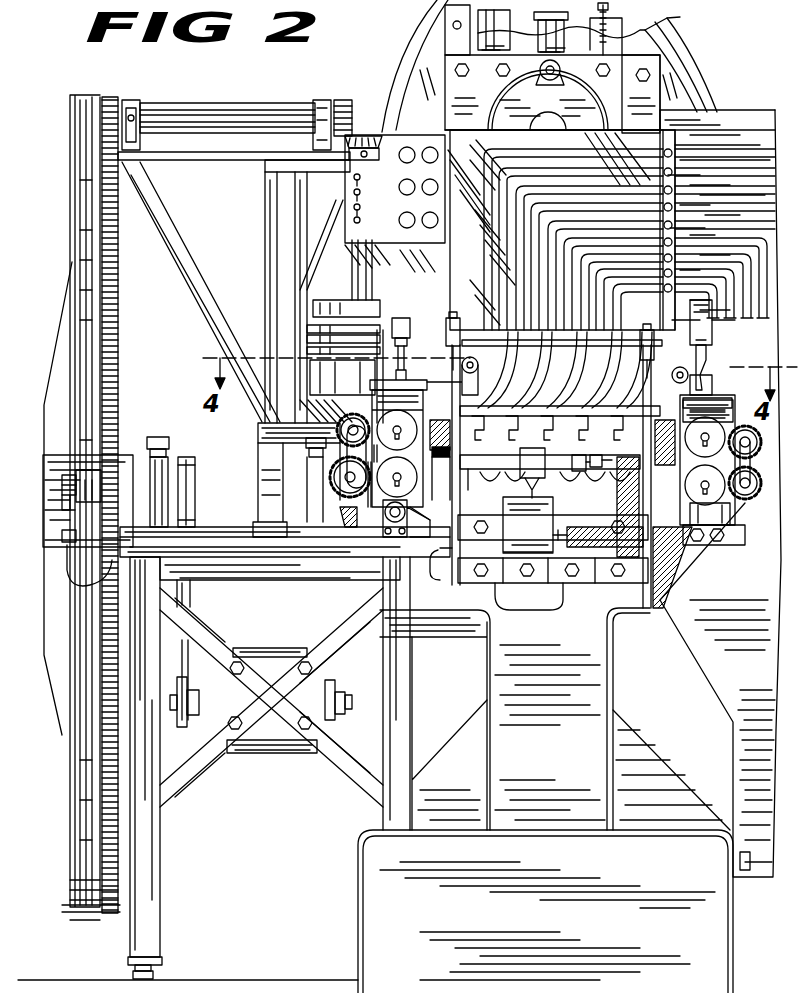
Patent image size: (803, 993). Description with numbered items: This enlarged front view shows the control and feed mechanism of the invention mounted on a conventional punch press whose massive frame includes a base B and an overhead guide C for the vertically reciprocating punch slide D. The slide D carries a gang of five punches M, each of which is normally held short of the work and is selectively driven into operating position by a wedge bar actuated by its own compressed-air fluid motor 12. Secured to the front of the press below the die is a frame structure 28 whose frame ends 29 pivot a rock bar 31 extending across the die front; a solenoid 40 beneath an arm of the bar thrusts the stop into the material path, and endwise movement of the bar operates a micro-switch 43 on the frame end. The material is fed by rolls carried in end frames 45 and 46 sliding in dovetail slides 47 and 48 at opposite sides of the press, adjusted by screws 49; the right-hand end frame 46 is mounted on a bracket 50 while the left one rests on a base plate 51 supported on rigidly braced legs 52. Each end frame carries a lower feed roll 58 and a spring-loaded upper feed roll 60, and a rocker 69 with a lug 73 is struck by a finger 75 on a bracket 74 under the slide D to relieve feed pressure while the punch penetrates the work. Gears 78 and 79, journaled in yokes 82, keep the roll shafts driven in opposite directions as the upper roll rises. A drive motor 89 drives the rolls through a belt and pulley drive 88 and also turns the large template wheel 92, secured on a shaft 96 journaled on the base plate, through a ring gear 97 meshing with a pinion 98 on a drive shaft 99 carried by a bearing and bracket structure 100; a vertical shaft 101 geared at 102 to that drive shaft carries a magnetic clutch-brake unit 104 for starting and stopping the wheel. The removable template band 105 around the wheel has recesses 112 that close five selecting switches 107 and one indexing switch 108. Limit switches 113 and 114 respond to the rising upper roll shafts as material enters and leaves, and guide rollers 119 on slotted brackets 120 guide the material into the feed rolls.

The fluid motor 12 is at (478, 300).
The frame structure 28 is at (568, 583).
The frame ends 29 is at (452, 548).
The rock bar 31 is at (545, 465).
The solenoid 40 is at (528, 525).
The micro-switch 43 is at (608, 465).
The end frame 45 is at (373, 495).
The end frame 46 is at (735, 505).
The dovetail slide 47 is at (345, 522).
The dovetail slide 48 is at (745, 525).
The screws 49 is at (380, 525).
The bracket 50 is at (677, 607).
The base plate 51 is at (246, 550).
The legs 52 is at (160, 885).
The lower feed roll 58 is at (398, 492).
The upper feed roll 60 is at (551, 457).
The rocker 69 is at (712, 362).
The lug 73 is at (452, 380).
The bracket 74 is at (453, 318).
The finger 75 is at (432, 318).
The gear 78 is at (342, 432).
The gear 79 is at (338, 488).
The yokes 82 is at (345, 470).
The belt and pulley drive 88 is at (192, 597).
The drive motor 89 is at (285, 650).
The wheel 92 is at (68, 272).
The shaft 96 is at (40, 512).
The ring gear 97 is at (118, 368).
The pinion 98 is at (131, 100).
The drive shaft 99 is at (268, 105).
The bearing and bracket structure 100 is at (162, 198).
The vertical shaft 101 is at (360, 285).
The gearing 102 is at (345, 100).
The magnetic clutch-brake unit 104 is at (300, 323).
The template 105 is at (82, 905).
The selecting switches 107 is at (58, 495).
The indexing switch 108 is at (55, 532).
The recesses 112 is at (75, 275).
The limit switch 113 is at (400, 313).
The limit switch 114 is at (712, 318).
The guide rollers 119 is at (169, 446).
The slotted brackets 120 is at (168, 475).
The base B is at (375, 898).
The overhead guide C is at (655, 90).
The punch slide D is at (612, 68).
The punches M is at (561, 389).